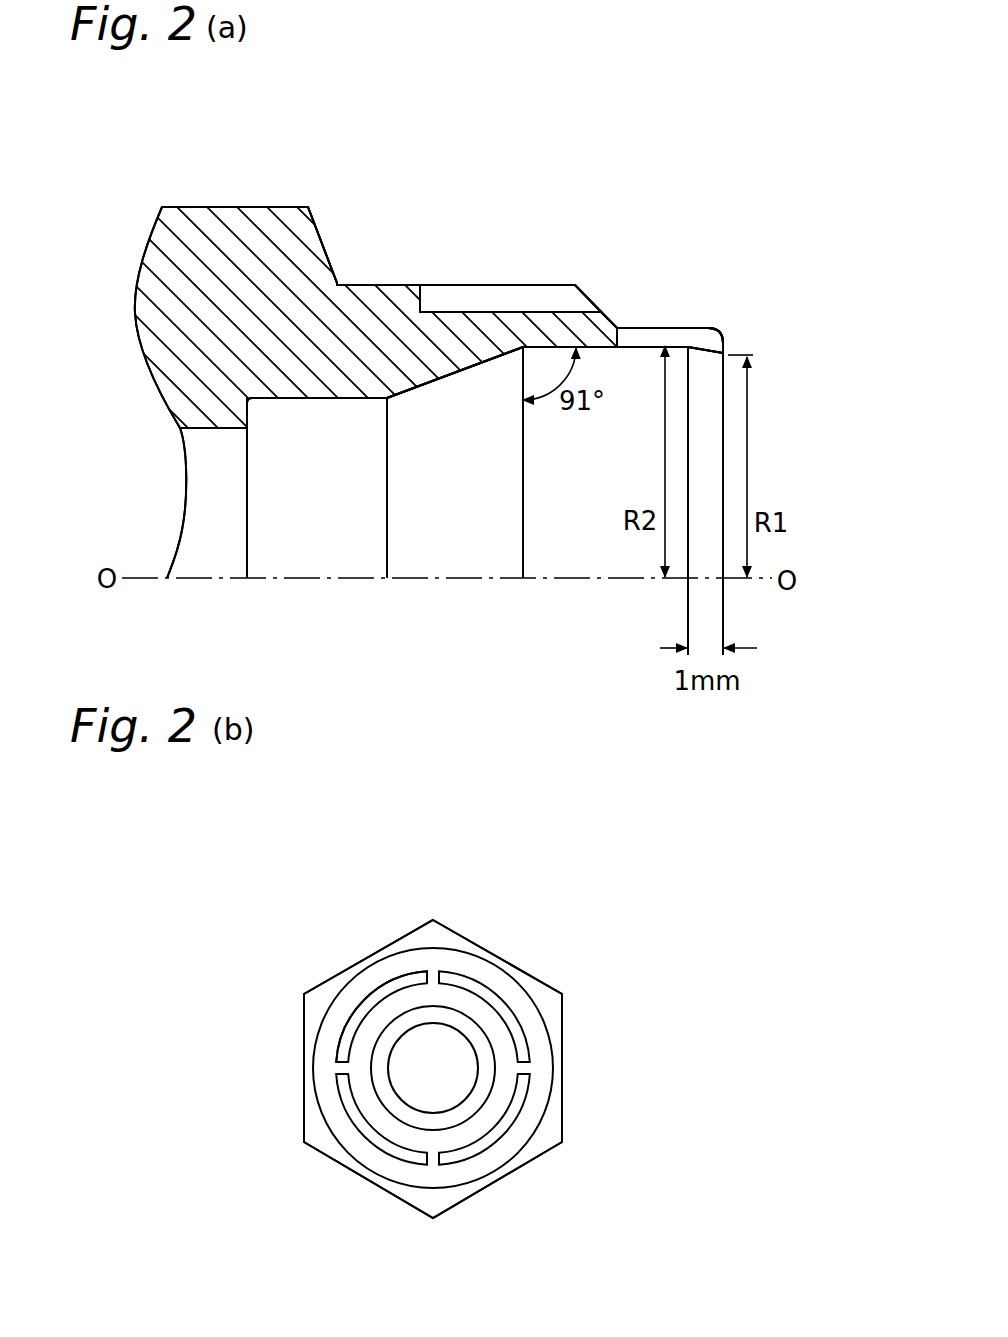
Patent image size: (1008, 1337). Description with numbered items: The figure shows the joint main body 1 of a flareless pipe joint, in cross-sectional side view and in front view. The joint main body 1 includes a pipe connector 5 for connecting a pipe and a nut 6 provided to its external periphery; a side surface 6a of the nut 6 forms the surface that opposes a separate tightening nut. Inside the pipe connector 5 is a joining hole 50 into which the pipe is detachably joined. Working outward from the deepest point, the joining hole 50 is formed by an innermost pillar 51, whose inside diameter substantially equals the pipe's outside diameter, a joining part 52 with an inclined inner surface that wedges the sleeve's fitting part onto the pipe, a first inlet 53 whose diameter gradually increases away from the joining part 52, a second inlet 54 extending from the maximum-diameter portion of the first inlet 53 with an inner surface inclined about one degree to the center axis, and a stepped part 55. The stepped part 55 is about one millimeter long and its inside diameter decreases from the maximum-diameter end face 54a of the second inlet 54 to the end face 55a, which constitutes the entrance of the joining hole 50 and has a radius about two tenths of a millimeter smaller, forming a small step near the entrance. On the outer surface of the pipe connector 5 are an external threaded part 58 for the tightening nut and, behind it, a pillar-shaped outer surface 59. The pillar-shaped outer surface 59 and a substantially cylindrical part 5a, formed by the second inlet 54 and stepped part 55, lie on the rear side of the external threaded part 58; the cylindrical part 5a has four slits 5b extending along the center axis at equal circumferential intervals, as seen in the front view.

In FIG. 2A, the joint main body 1 is at (190, 187).
In FIG. 2B, the joint main body 1 is at (423, 909).
In FIG. 2A, the pipe connector 5 is at (375, 325).
In FIG. 2A, the cylindrical part 5a is at (668, 330).
In FIG. 2B, the cylindrical part 5a is at (384, 981).
In FIG. 2A, the slits 5b is at (670, 453).
In FIG. 2B, the slits 5b is at (433, 975).
In FIG. 2A, the nut 6 is at (233, 240).
In FIG. 2B, the nut 6 is at (548, 995).
In FIG. 2A, the side surface 6a is at (340, 276).
In FIG. 2A, the joining hole 50 is at (273, 531).
In FIG. 2B, the joining hole 50 is at (503, 1048).
In FIG. 2A, the innermost pillar 51 is at (352, 401).
In FIG. 2A, the joining part 52 is at (399, 401).
In FIG. 2A, the first inlet 53 is at (454, 378).
In FIG. 2A, the second inlet 54 is at (617, 349).
In FIG. 2A, the end face 54a is at (688, 328).
In FIG. 2A, the stepped part 55 is at (708, 330).
In FIG. 2A, the end face 55a is at (727, 345).
In FIG. 2B, the end face 55a is at (360, 1010).
In FIG. 2A, the external threaded part 58 is at (455, 297).
In FIG. 2B, the external threaded part 58 is at (323, 1046).
In FIG. 2A, the pillar-shaped outer surface 59 is at (642, 327).